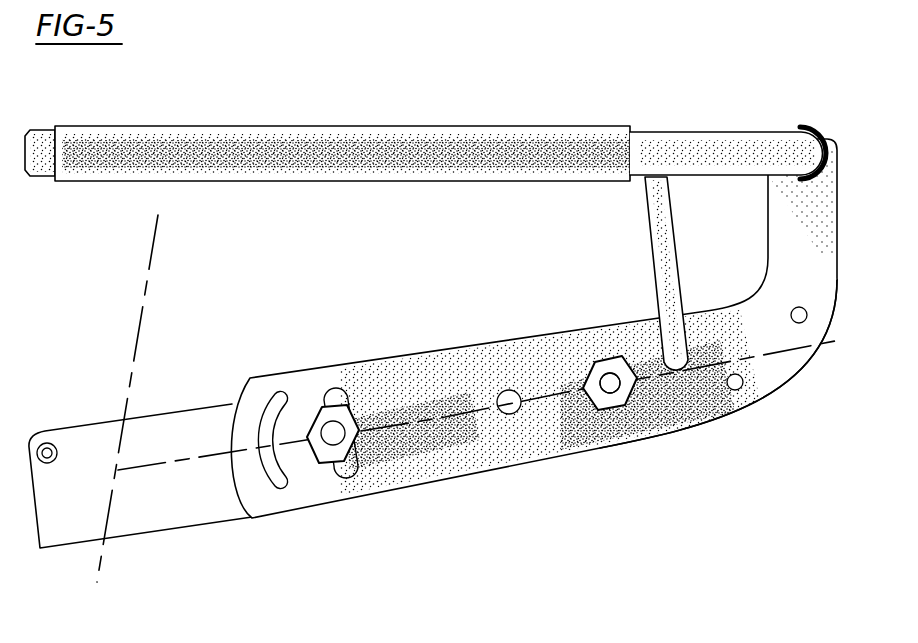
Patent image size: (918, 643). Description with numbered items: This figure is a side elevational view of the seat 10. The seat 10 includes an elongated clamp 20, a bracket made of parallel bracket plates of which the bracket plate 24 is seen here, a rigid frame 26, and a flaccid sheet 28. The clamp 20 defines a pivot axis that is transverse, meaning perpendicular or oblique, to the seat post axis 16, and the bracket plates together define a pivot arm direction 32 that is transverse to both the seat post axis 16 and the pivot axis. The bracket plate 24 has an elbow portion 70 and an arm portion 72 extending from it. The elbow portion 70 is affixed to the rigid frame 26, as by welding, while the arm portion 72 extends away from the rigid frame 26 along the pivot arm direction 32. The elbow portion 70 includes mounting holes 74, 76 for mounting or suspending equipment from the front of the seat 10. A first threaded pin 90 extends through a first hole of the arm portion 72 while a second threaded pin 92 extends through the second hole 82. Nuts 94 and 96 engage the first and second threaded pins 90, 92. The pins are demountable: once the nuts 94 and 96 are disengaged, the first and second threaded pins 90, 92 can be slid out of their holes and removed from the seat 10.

The seat 10 is at (255, 114).
The seat post axis 16 is at (148, 283).
The clamp 20 is at (168, 416).
The bracket plate 24 is at (786, 246).
The rigid frame 26 is at (715, 150).
The flaccid sheet 28 is at (428, 128).
The pivot arm direction 32 is at (824, 347).
The elbow portion 70 is at (773, 380).
The arm portion 72 is at (500, 357).
The mounting hole 74 is at (792, 312).
The mounting hole 76 is at (733, 390).
The second hole 82 is at (266, 492).
The first threaded pin 90 is at (606, 358).
The second threaded pin 92 is at (333, 420).
The nut 94 is at (608, 412).
The nut 96 is at (357, 447).